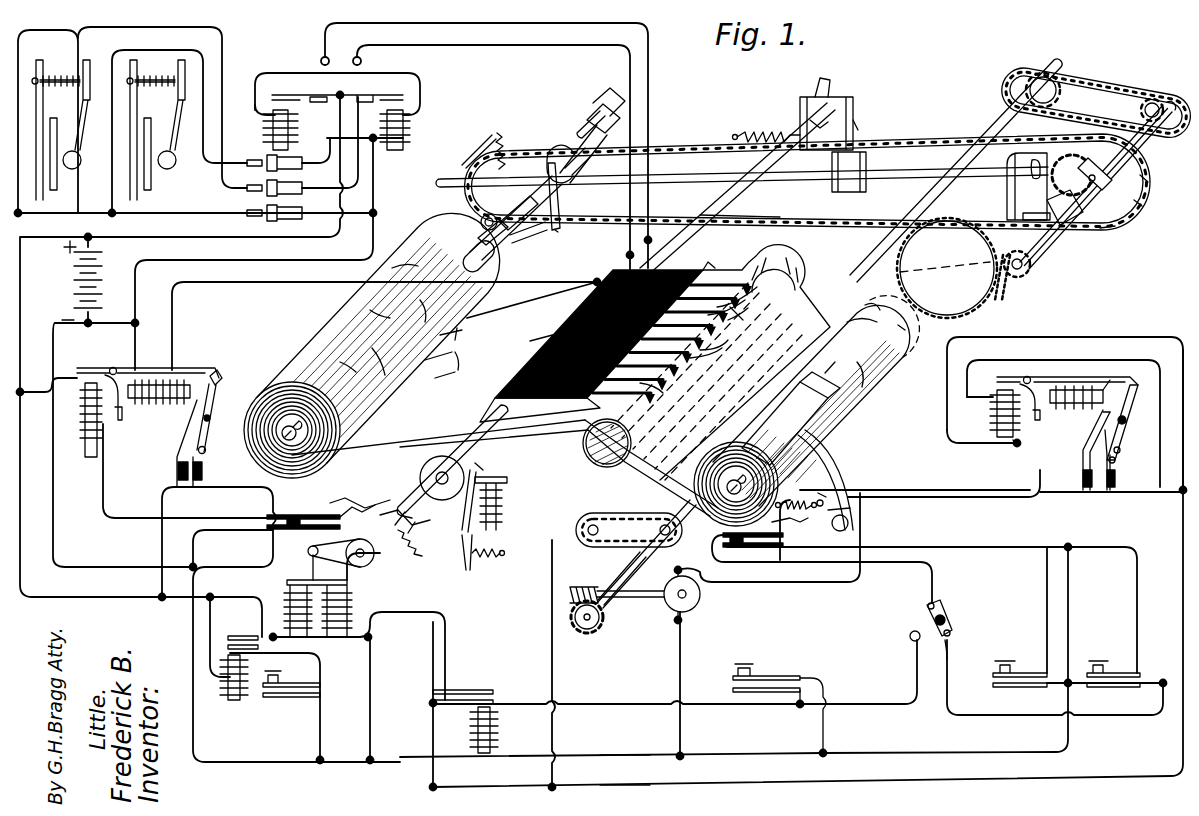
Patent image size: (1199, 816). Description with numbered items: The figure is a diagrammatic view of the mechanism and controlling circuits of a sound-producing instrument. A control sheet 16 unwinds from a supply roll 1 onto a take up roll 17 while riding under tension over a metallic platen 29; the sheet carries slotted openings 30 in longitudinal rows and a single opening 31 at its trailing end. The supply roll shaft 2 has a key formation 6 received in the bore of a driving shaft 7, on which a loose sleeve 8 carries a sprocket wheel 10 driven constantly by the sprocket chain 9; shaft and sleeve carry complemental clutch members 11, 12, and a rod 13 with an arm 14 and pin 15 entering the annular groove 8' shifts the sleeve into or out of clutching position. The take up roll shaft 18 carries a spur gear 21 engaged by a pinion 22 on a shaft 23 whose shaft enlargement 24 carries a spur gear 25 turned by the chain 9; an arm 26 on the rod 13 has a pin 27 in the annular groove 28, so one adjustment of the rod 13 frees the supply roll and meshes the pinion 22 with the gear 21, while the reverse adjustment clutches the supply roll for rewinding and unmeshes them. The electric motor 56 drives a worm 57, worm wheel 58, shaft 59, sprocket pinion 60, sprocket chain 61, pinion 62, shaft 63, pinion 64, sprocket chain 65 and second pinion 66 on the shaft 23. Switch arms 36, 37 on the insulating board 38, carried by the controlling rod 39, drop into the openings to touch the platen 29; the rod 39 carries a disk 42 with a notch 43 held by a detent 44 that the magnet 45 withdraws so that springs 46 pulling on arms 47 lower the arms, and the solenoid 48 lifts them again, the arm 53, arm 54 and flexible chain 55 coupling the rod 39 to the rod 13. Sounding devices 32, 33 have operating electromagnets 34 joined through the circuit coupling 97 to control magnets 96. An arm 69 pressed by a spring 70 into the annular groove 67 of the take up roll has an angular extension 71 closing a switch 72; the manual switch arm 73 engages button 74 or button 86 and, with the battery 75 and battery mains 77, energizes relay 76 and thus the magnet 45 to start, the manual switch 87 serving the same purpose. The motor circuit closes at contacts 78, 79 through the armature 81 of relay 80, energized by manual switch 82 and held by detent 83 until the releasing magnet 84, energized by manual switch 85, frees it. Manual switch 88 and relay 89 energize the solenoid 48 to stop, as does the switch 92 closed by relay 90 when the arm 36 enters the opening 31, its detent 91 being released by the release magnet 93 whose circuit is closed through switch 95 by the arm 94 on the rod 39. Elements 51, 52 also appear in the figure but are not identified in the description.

The supply roll 1 is at (335, 322).
The shaft 2 is at (285, 430).
The key formation 6 is at (482, 256).
The driving shaft 7 is at (505, 240).
The sleeve 8 is at (500, 216).
The annular groove 8' is at (462, 225).
The sprocket chain 9 is at (700, 152).
The sprocket wheel 10 is at (550, 165).
The clutch member 11 is at (592, 150).
The clutch member 12 is at (578, 128).
The rod 13 is at (445, 186).
The arm 14 is at (560, 222).
The pin 15 is at (528, 232).
The control sheet 16 is at (512, 308).
The take up roll 17 is at (731, 483).
The shaft 18 is at (945, 270).
The spur gear 21 is at (1015, 277).
The pinion 22 is at (1030, 266).
The shaft 23 is at (1052, 232).
The shaft enlargement 24 is at (1140, 175).
The spur gear 25 is at (1138, 202).
The arm 26 is at (1010, 195).
The pin 27 is at (1090, 175).
The annular groove 28 is at (1115, 226).
The metallic platen 29 is at (793, 270).
The openings 30 is at (462, 356).
The opening 31 is at (344, 368).
The sounding device 32 is at (50, 178).
The sounding device 33 is at (147, 178).
The operating electromagnet 34 is at (66, 75).
The switch arm 36 is at (700, 340).
The switch arms 37 is at (645, 392).
The insulating board 38 is at (690, 272).
The controlling rod 39 is at (735, 196).
The disk 42 is at (430, 470).
The notch 43 is at (480, 491).
The detent 44 is at (465, 567).
The magnet 45 is at (500, 494).
The springs 46 is at (414, 549).
The arms 47 is at (470, 553).
The solenoid 48 is at (352, 605).
The spring 51 is at (510, 140).
The lever 52 is at (478, 148).
The arm 53 is at (832, 100).
The arm 54 is at (860, 182).
The chain 55 is at (860, 128).
The electric motor 56 is at (665, 603).
The worm 57 is at (583, 587).
The worm wheel 58 is at (600, 622).
The shaft 59 is at (618, 572).
The sprocket pinion 60 is at (672, 518).
The sprocket chain 61 is at (665, 470).
The pinion 62 is at (629, 530).
The shaft 63 is at (845, 268).
The pinion 64 is at (1021, 85).
The sprocket chain 65 is at (1082, 80).
The second pinion 66 is at (1143, 112).
The annular groove 67 is at (752, 425).
The arm 69 is at (815, 465).
The spring 70 is at (820, 503).
The angular extension 71 is at (812, 525).
The switch 72 is at (727, 533).
The switch arm 73 is at (945, 607).
The button 74 is at (910, 636).
The battery 75 is at (72, 280).
The relay 76 is at (472, 718).
The battery mains 77 is at (626, 786).
The contact 78 is at (1088, 448).
The contact 79 is at (1122, 436).
The relay 80 is at (1078, 377).
The armature 81 is at (1130, 408).
The manual switch 82 is at (1020, 670).
The detent 83 is at (1125, 377).
The releasing magnet 84 is at (993, 420).
The manual switch 85 is at (1112, 670).
The button 86 is at (952, 636).
The manual switch 87 is at (779, 677).
The manually operated switch 88 is at (296, 700).
The relay 89 is at (228, 700).
The relay 90 is at (160, 368).
The detent 91 is at (215, 368).
The switch 92 is at (190, 420).
The release magnet 93 is at (83, 420).
The arm 94 is at (368, 508).
The switch 95 is at (312, 512).
The control magnets 96 is at (353, 122).
The circuit coupling 97 is at (250, 205).